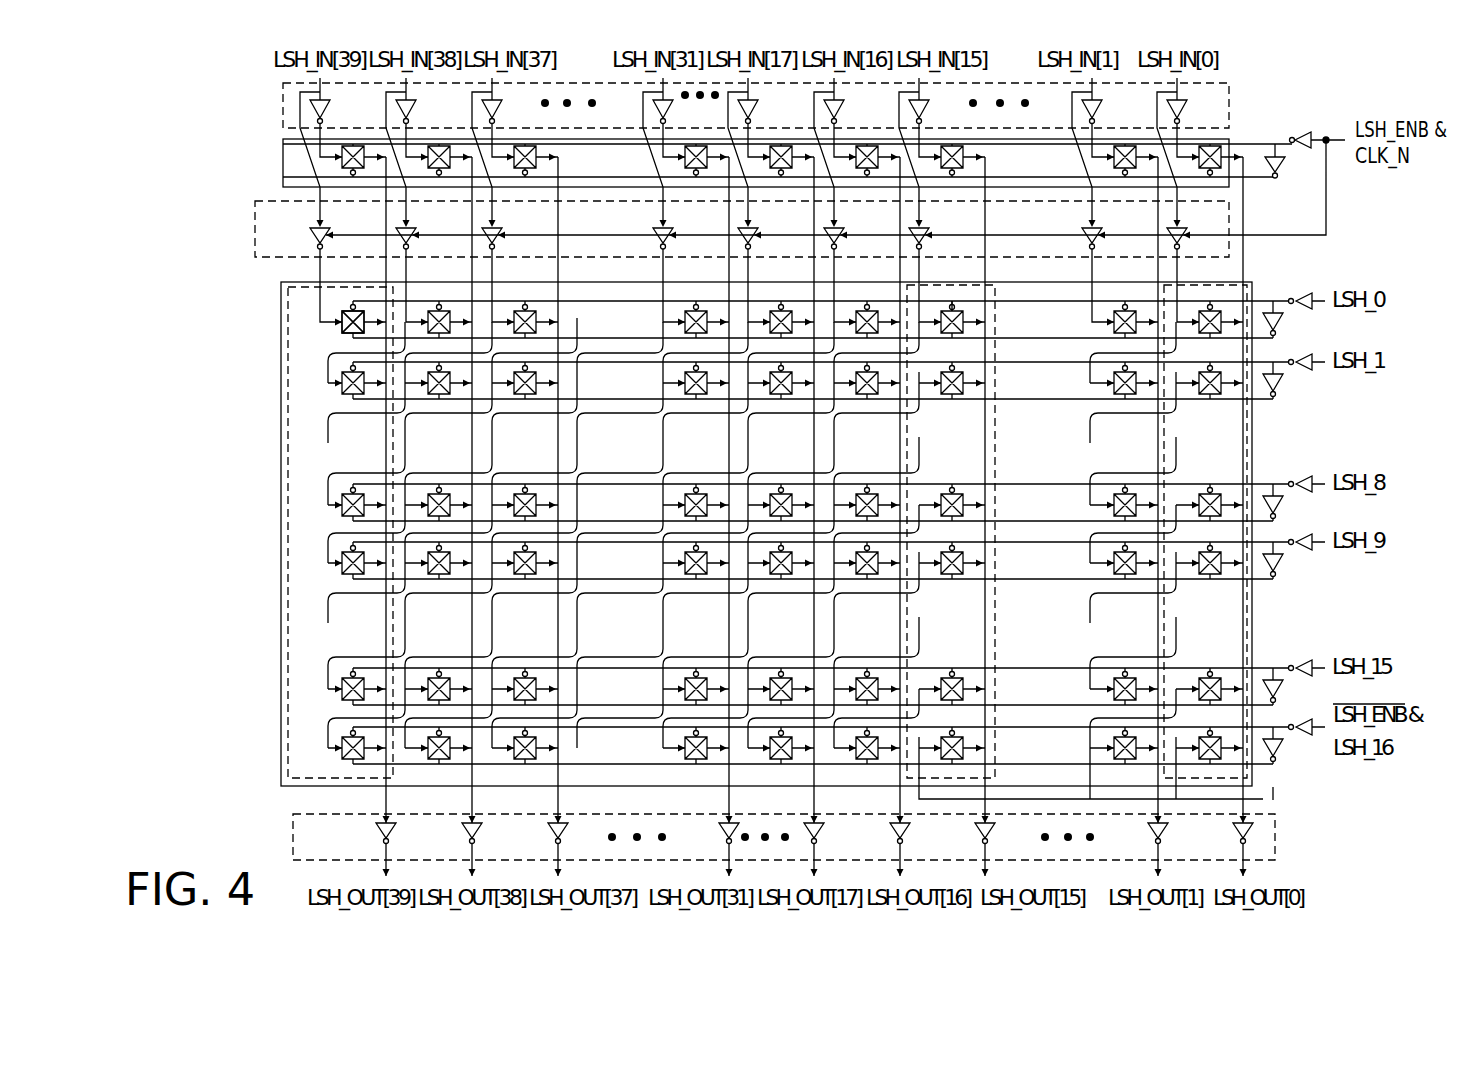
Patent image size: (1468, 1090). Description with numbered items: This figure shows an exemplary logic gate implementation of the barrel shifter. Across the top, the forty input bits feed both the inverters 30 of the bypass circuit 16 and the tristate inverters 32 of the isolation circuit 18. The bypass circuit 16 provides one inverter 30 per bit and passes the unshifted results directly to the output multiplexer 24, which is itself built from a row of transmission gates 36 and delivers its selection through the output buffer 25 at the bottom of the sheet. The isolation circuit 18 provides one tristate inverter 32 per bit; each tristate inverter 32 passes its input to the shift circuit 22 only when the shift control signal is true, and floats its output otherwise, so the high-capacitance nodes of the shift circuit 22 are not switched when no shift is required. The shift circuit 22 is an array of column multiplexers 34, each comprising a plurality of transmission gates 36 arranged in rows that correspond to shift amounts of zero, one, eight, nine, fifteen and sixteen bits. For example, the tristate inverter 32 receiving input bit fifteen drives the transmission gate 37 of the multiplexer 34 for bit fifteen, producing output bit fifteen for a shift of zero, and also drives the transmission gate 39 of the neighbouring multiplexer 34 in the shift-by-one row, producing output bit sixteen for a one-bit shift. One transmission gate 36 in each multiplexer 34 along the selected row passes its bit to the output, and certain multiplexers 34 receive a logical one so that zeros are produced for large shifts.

The bypass circuit 16 is at (274, 103).
The isolation circuit 18 is at (255, 236).
The shift circuit 22 is at (777, 515).
The output multiplexer 24 is at (282, 165).
The output buffer 25 is at (288, 830).
The inverter 30 is at (1184, 108).
The tristate inverter 32 is at (1100, 228).
The multiplexer 34 is at (1256, 285).
The transmission gate 36 is at (342, 333).
The transmission gate 37 is at (960, 308).
The transmission gate 39 is at (870, 402).